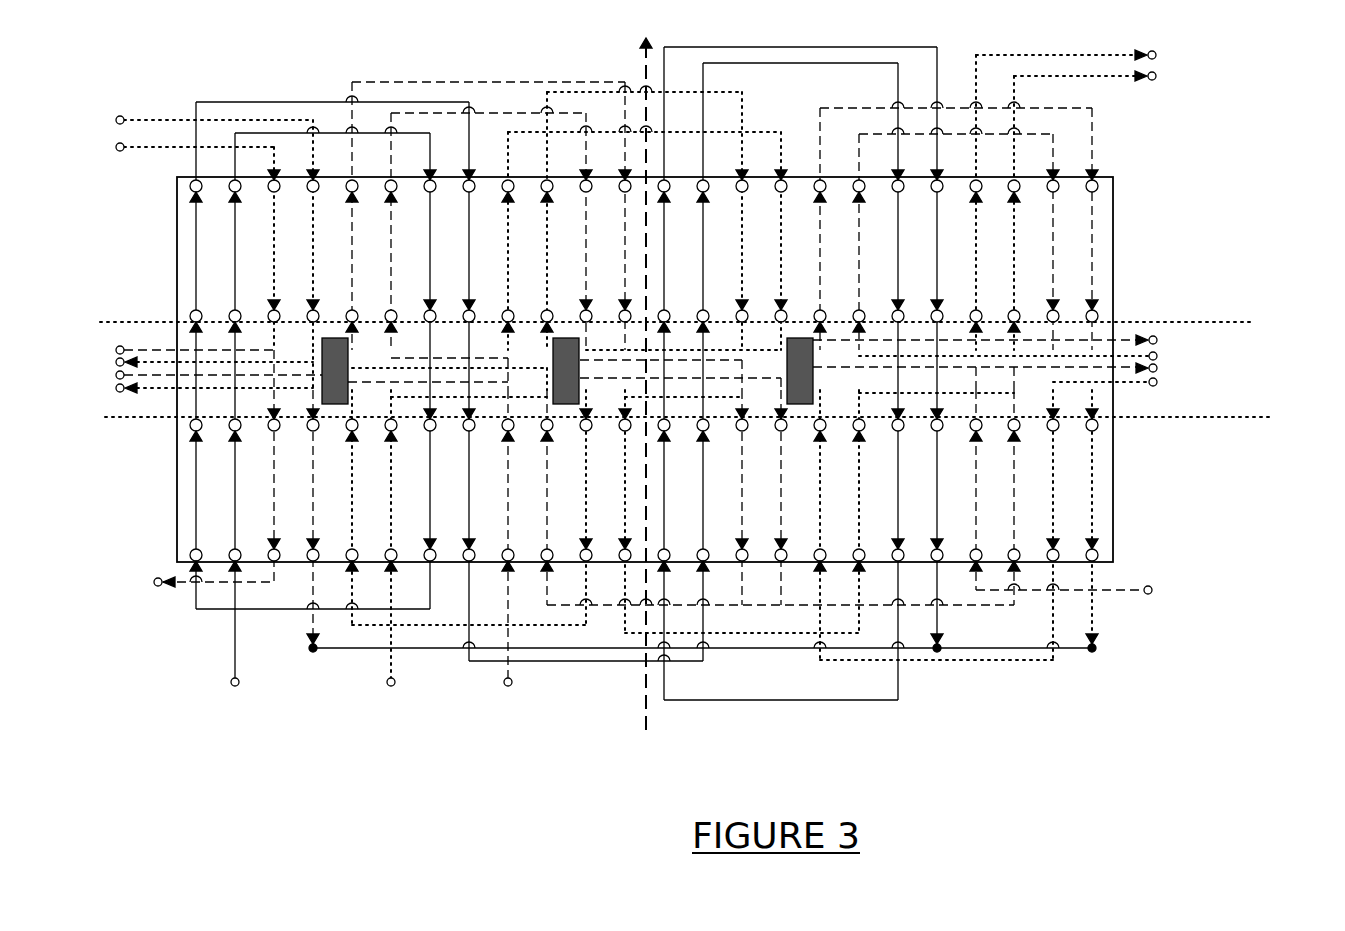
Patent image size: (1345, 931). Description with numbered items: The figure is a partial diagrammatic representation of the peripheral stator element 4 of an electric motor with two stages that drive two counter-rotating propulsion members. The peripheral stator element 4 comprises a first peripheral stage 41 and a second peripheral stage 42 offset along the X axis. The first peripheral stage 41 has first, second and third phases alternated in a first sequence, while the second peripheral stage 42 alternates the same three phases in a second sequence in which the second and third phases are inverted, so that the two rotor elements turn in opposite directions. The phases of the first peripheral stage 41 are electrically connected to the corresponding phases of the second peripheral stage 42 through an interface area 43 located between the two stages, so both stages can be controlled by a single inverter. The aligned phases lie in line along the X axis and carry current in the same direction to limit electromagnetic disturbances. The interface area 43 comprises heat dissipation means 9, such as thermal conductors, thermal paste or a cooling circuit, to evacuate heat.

The peripheral stator element 4 is at (1290, 165).
The second peripheral stage 42 is at (1113, 282).
The interface area 43 is at (1113, 407).
The first peripheral stage 41 is at (1113, 485).
The heat dissipation means 9 is at (330, 405).